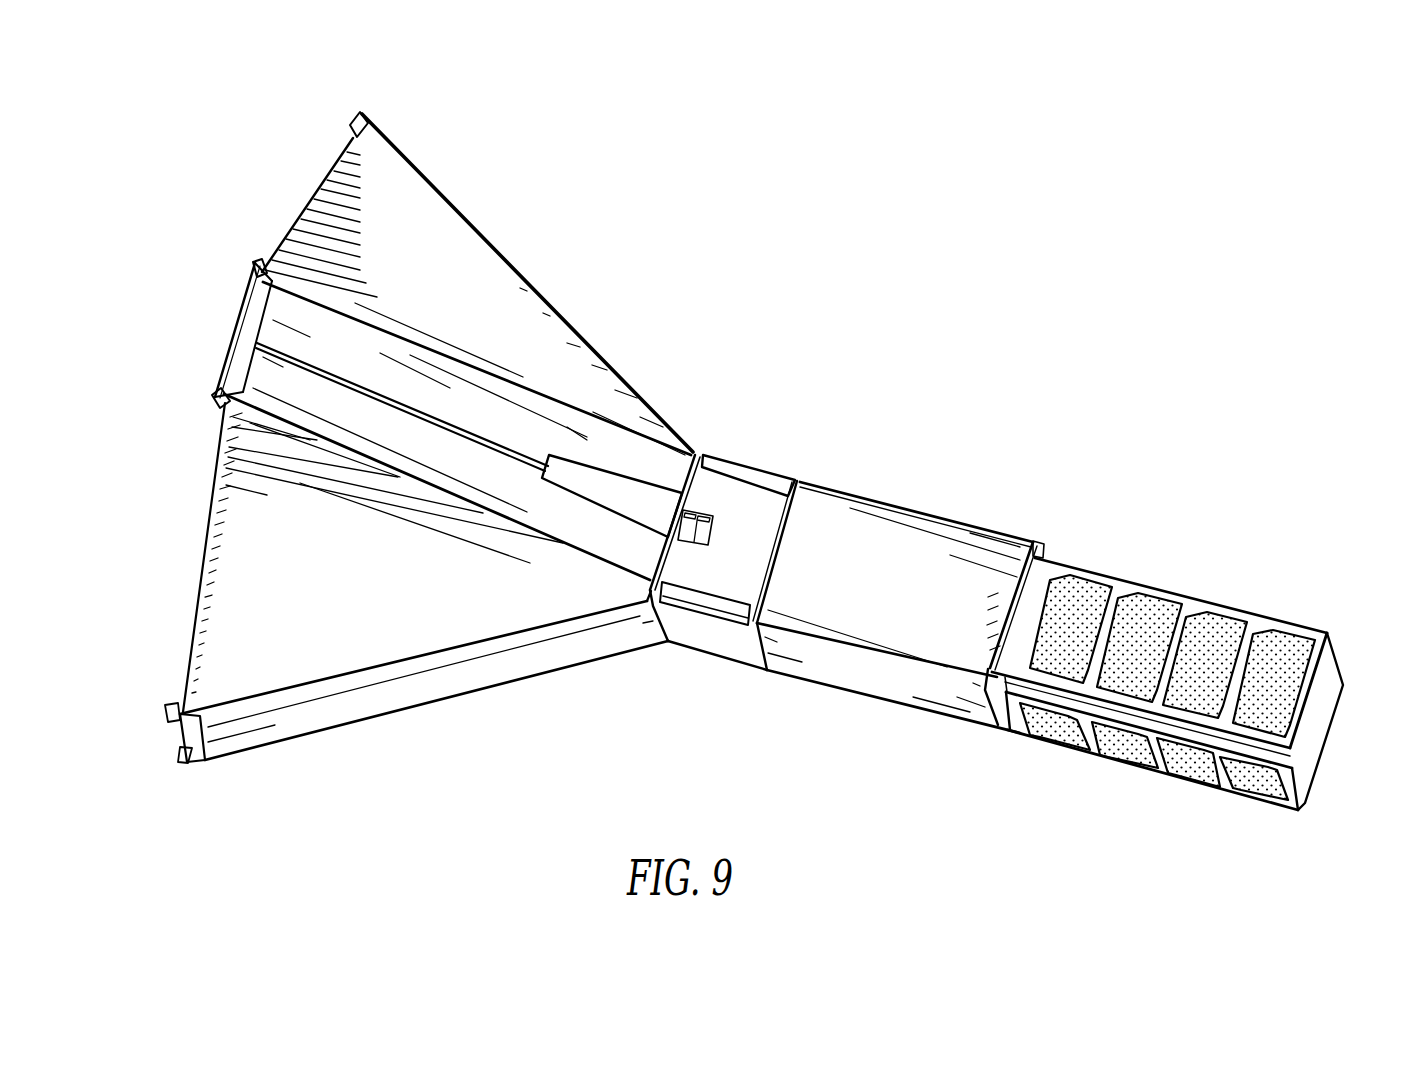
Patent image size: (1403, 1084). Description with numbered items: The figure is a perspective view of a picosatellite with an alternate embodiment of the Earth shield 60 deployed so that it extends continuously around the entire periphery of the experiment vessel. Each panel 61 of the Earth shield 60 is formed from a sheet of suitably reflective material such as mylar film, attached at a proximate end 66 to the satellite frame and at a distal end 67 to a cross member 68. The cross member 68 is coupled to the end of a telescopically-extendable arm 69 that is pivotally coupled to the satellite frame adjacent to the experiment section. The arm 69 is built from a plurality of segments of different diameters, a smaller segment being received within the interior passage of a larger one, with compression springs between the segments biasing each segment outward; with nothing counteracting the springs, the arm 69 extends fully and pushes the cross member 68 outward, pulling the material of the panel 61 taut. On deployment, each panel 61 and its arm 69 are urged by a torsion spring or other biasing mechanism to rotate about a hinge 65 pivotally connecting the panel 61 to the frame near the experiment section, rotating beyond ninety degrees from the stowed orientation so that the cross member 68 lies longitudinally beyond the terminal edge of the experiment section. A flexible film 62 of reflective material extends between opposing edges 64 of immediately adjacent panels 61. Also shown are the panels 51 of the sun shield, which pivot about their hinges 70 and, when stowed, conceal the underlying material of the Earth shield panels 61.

The panels 51 is at (1160, 590).
The Earth shield 60 is at (451, 194).
The panels 61 is at (281, 331).
The flexible film 62 is at (233, 539).
The edges 64 is at (220, 710).
The hinge 65 is at (690, 480).
The proximate end 66 is at (694, 452).
The distal end 67 is at (242, 392).
The cross member 68 is at (237, 345).
The telescopically-extendable arm 69 is at (373, 380).
The hinges 70 is at (1028, 568).